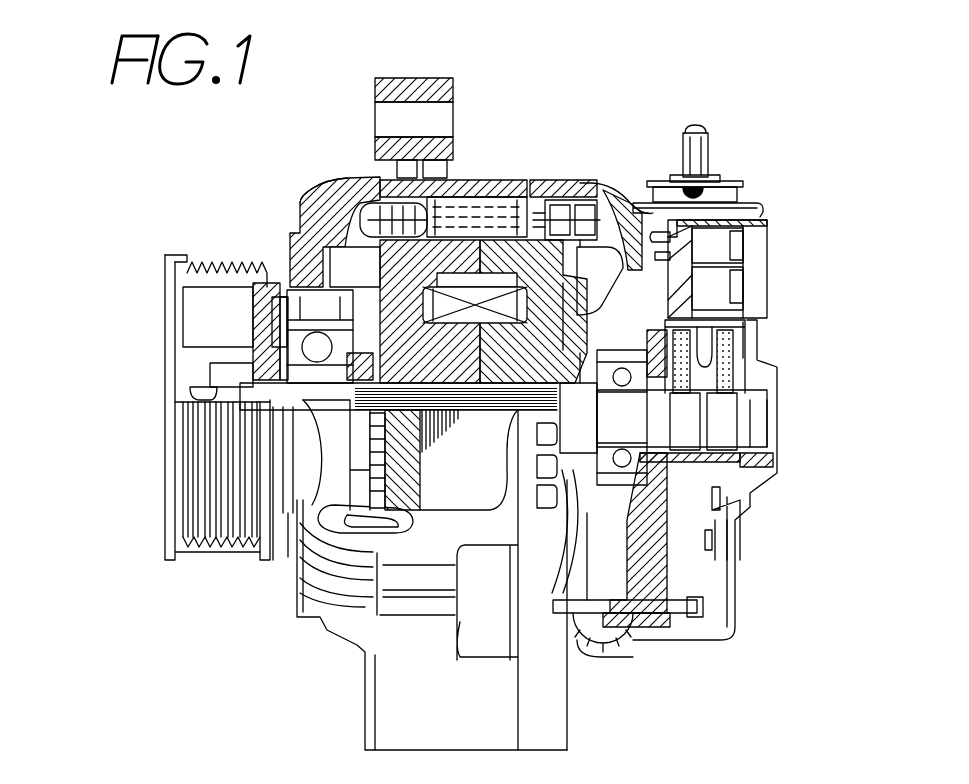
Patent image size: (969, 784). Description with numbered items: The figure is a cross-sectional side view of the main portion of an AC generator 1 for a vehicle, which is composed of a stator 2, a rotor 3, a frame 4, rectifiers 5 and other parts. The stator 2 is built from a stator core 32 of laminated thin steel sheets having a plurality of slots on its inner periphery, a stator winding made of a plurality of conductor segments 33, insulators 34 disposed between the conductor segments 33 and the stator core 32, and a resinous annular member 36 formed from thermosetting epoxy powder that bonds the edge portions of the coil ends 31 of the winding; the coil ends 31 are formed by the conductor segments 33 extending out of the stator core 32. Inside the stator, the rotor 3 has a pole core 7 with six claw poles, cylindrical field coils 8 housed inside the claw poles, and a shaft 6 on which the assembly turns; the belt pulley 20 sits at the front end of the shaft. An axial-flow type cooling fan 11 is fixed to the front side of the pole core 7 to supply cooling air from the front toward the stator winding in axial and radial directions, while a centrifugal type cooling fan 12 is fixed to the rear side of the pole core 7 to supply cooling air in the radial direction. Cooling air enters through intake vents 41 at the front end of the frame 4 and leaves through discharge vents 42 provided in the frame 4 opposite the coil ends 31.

The AC generator 1 is at (613, 68).
The stator 2 is at (587, 193).
The rotor 3 is at (340, 242).
The frame 4 is at (500, 253).
The rectifiers 5 is at (738, 520).
The shaft 6 is at (220, 348).
The pole core 7 is at (633, 200).
The field coils 8 is at (473, 290).
The axial-flow type cooling fan 11 is at (337, 273).
The centrifugal type cooling fan 12 is at (610, 292).
The pulley 20 is at (200, 262).
The coil ends 31 is at (377, 195).
The stator core 32 is at (470, 180).
The conductor segments 33 is at (560, 190).
The insulators 34 is at (547, 193).
The resinous annular member 36 is at (613, 205).
The intake vents 41 is at (300, 272).
The discharge vents 42 is at (343, 192).